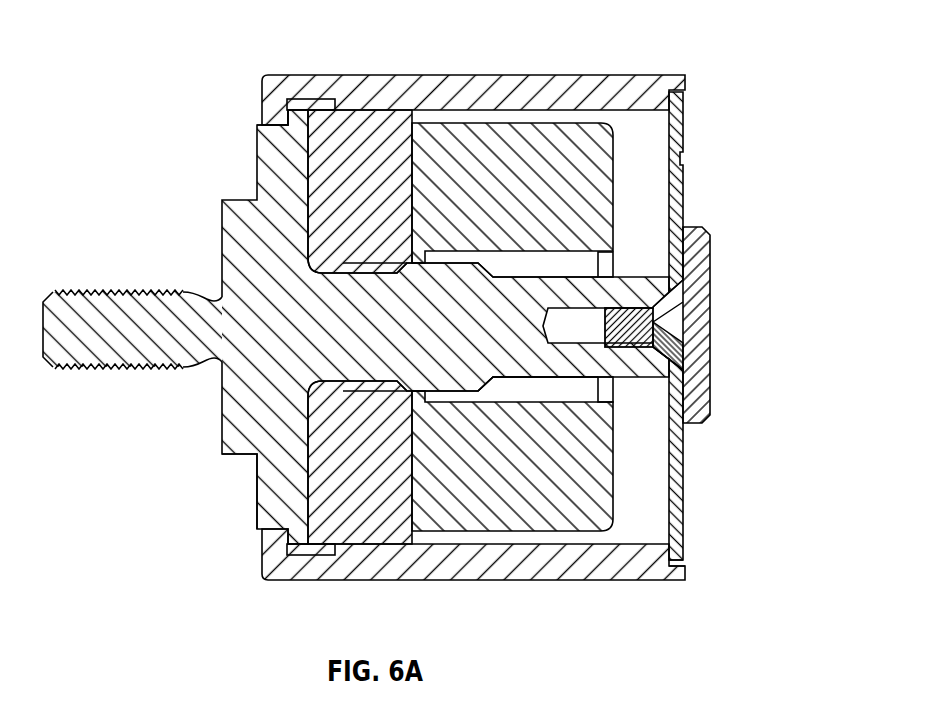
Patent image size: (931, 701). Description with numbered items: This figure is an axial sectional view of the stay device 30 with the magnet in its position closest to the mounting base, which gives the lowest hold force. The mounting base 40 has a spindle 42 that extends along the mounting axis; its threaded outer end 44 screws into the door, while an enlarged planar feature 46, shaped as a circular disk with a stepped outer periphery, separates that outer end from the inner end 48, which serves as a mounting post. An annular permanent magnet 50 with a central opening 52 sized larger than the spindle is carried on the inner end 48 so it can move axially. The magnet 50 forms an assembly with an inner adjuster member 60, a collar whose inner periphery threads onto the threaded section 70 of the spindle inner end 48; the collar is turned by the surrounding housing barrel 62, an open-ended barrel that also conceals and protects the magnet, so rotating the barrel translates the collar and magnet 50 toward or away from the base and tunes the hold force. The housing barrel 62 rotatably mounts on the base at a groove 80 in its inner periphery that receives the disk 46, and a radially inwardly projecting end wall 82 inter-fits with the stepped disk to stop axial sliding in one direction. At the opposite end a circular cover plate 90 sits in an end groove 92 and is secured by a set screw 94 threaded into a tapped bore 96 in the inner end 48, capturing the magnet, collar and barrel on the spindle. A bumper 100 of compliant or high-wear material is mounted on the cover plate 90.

The stay device 30 is at (202, 34).
The mounting base 40 is at (185, 437).
The spindle 42 is at (116, 286).
The outer end 44 is at (113, 368).
The planar feature 46 is at (262, 515).
The inner end 48 is at (543, 378).
The permanent magnet 50 is at (490, 520).
The central opening 52 is at (598, 257).
The inner adjuster member 60 is at (378, 113).
The housing barrel 62 is at (568, 560).
The threaded section 70 is at (443, 290).
The groove 80 is at (318, 102).
The end wall 82 is at (258, 116).
The cover plate 90 is at (682, 190).
The end groove 92 is at (690, 562).
The set screw 94 is at (683, 358).
The tapped bore 96 is at (653, 350).
The bumper 100 is at (708, 275).